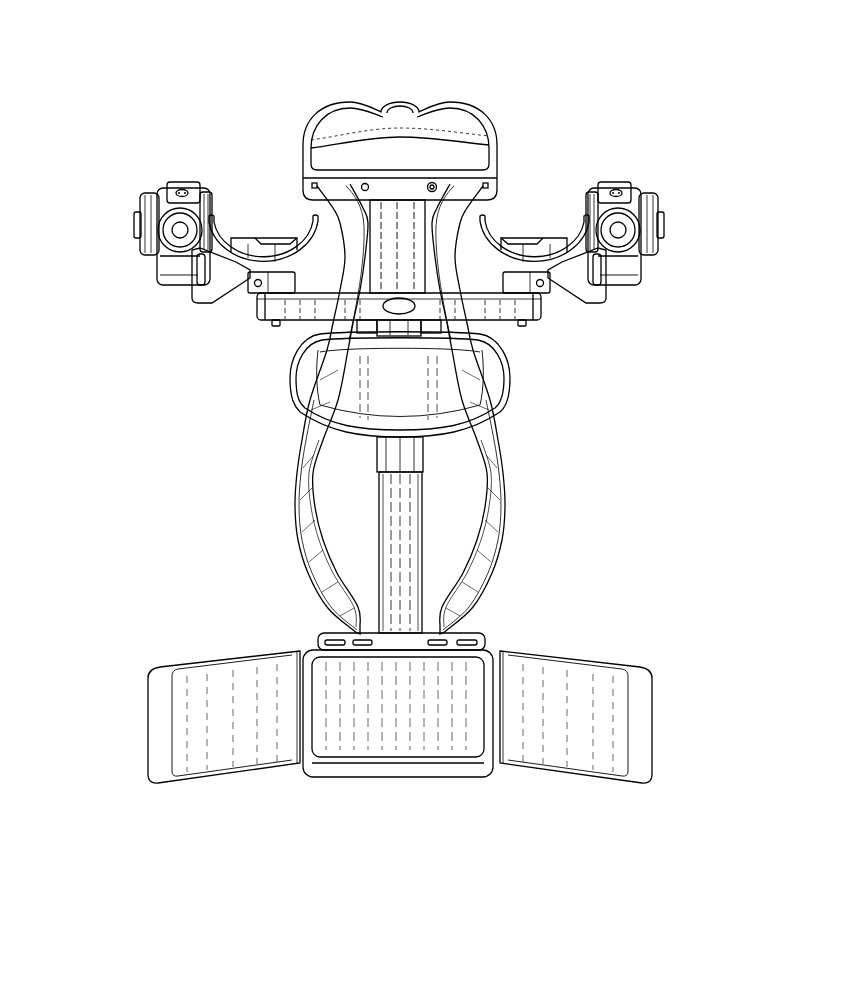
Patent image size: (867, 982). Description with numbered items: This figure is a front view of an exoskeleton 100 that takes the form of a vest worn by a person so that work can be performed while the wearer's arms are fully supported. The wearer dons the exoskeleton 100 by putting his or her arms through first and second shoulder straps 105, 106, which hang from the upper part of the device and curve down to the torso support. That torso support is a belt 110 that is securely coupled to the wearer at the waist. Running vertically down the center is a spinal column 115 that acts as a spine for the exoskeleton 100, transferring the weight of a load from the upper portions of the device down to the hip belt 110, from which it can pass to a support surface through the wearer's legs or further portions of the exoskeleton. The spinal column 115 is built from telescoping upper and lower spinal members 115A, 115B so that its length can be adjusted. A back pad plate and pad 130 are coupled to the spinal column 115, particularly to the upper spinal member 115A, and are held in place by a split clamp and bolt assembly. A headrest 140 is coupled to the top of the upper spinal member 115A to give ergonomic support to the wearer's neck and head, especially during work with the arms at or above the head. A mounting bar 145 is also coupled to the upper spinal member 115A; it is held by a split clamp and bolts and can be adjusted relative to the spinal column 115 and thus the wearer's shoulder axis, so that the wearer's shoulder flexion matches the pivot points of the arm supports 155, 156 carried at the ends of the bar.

The exoskeleton 100 is at (257, 69).
The headrest 140 is at (471, 125).
The arm support 156 is at (170, 176).
The arm support 155 is at (660, 184).
The mounting bar 145 is at (292, 310).
The back pad plate and pad 130 is at (500, 377).
The upper spinal member 115A is at (412, 455).
The spinal column 115 is at (402, 526).
The lower spinal member 115B is at (405, 602).
The second shoulder strap 106 is at (315, 568).
The first shoulder strap 105 is at (482, 568).
The belt 110 is at (580, 686).